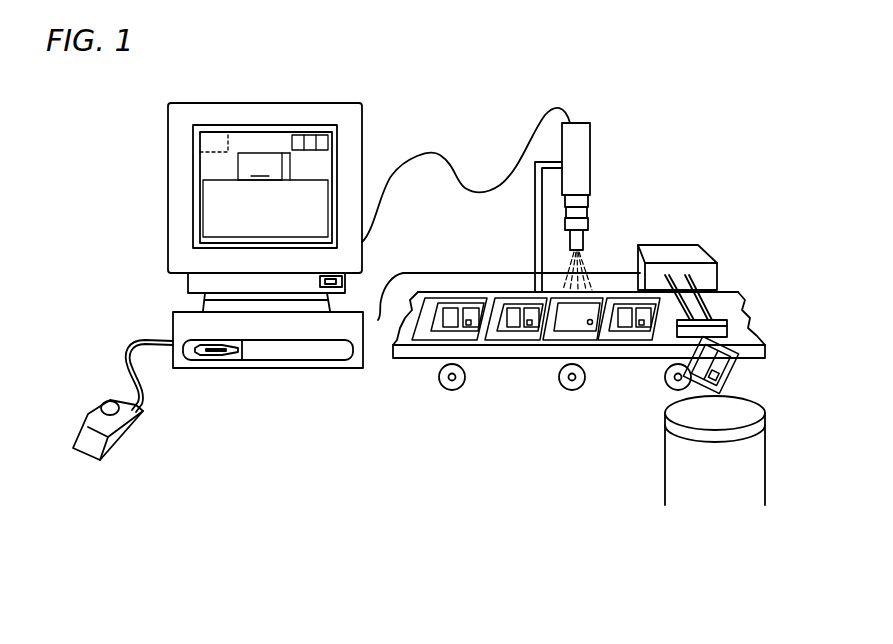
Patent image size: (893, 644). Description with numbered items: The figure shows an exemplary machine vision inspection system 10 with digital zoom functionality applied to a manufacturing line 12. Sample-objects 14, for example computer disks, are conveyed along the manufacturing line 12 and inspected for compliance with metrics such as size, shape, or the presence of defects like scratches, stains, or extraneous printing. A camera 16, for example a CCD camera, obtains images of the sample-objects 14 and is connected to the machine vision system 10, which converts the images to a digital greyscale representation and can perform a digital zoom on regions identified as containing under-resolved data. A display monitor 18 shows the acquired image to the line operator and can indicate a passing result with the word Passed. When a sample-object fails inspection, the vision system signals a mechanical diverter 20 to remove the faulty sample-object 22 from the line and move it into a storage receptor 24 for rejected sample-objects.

The machine vision inspection system 10 is at (278, 334).
The manufacturing line 12 is at (434, 396).
The sample-object 14 is at (580, 323).
The camera 16 is at (585, 169).
The display monitor 18 is at (356, 156).
The mechanical diverter 20 is at (705, 272).
The faulty sample-object 22 is at (735, 372).
The storage receptor 24 is at (706, 490).